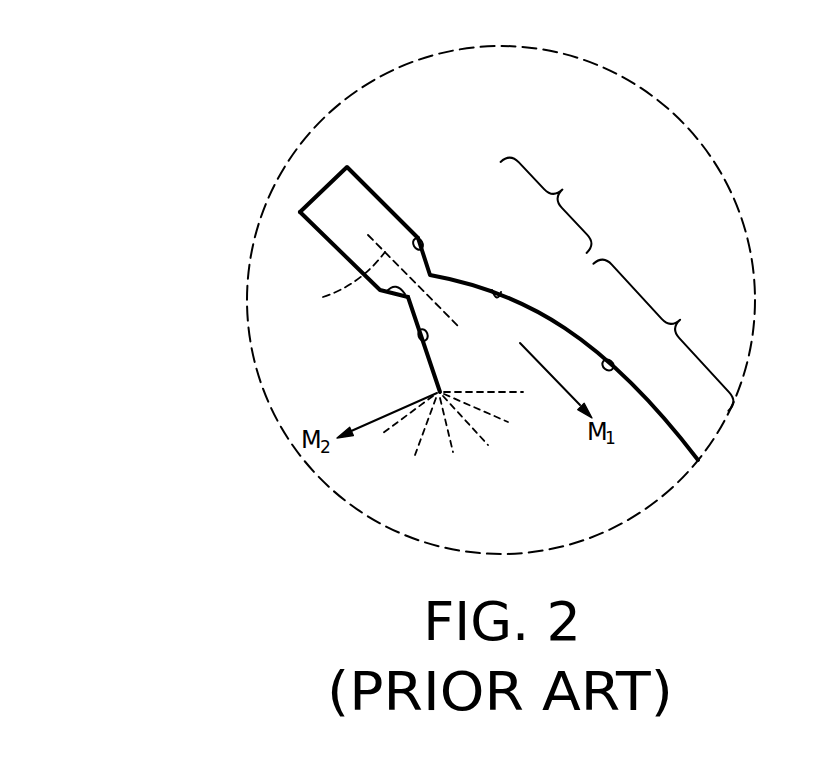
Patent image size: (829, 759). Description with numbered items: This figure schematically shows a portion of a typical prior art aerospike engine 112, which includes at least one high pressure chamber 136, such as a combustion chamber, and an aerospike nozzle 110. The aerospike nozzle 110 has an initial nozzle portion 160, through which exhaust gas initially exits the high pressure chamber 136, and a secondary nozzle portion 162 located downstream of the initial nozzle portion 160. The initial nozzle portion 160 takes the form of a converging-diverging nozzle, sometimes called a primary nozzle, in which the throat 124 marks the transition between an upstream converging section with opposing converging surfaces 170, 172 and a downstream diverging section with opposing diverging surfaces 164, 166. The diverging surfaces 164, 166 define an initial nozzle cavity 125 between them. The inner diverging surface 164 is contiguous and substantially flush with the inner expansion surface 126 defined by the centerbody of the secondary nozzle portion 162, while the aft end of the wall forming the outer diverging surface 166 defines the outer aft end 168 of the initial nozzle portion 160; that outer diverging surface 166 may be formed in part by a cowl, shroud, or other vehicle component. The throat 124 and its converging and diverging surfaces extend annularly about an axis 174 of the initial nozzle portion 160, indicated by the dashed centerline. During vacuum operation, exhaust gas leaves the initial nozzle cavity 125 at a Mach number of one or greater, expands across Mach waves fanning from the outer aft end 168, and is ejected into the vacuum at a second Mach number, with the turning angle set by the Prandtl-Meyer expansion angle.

The aerospike nozzle 110 is at (222, 325).
The aerospike engine 112 is at (158, 215).
The throat 124 is at (442, 270).
The initial nozzle cavity 125 is at (460, 354).
The inner expansion surface 126 is at (607, 360).
The high pressure chamber 136 is at (330, 224).
The initial nozzle portion 160 is at (550, 205).
The secondary nozzle portion 162 is at (663, 335).
The inner diverging surface 164 is at (497, 290).
The outer diverging surface 166 is at (413, 331).
The outer aft end 168 is at (437, 390).
The converging surface 170 is at (416, 235).
The converging surface 172 is at (382, 292).
The axis 174 is at (339, 280).